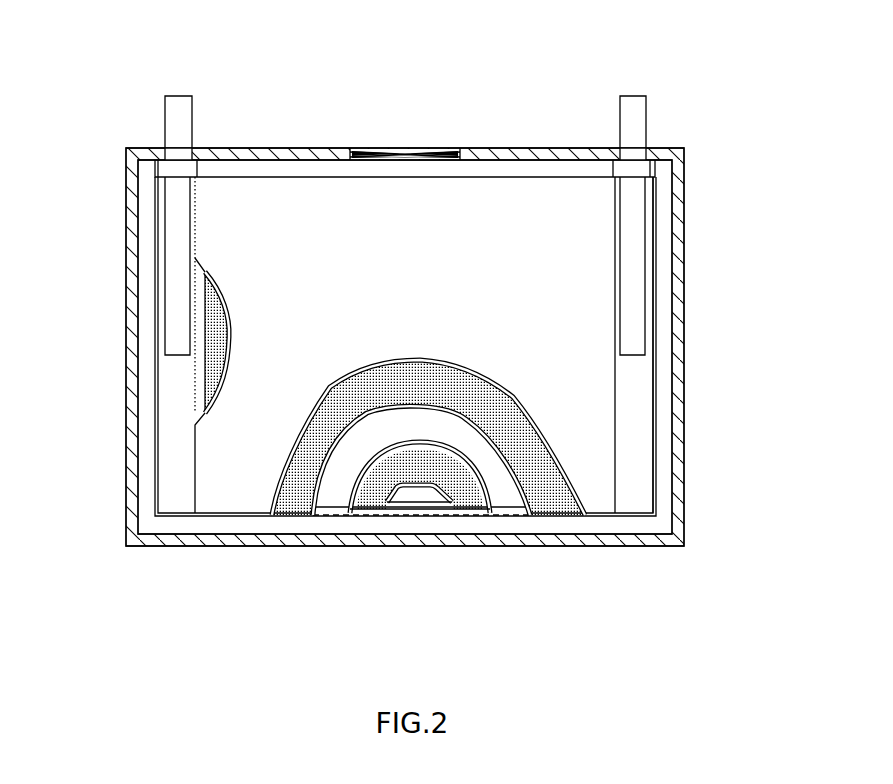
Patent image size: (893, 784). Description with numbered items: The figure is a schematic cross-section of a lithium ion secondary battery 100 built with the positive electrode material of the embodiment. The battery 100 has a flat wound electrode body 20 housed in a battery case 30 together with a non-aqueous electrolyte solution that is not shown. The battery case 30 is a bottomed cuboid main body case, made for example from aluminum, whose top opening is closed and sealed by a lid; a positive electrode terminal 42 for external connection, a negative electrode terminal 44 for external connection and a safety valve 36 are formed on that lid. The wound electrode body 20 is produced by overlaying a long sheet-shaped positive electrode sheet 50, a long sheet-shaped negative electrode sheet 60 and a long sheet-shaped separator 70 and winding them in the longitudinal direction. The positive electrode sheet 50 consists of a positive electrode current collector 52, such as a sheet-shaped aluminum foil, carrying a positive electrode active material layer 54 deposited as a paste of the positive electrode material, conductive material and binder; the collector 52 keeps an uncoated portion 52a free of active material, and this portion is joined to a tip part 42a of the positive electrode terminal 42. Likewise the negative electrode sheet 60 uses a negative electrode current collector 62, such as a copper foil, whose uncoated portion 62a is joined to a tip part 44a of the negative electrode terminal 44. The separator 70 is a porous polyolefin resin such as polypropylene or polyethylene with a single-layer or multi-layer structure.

The lithium ion secondary battery 100 is at (683, 114).
The wound electrode body 20 is at (292, 210).
The battery case 30 is at (683, 257).
The safety valve 36 is at (405, 149).
The positive electrode terminal 42 is at (177, 95).
The tip part of the positive electrode terminal 42a is at (177, 245).
The negative electrode terminal 44 is at (632, 102).
The tip part of the negative electrode terminal 44a is at (632, 210).
The positive electrode sheet 50 is at (292, 502).
The positive electrode current collector 52 is at (155, 412).
The uncoated portion of the positive electrode current collector 52a is at (173, 490).
The positive electrode active material layer 54 is at (218, 308).
The negative electrode sheet 60 is at (368, 497).
The negative electrode current collector 62 is at (655, 368).
The uncoated portion of the negative electrode current collector 62a is at (640, 415).
The separator 70 is at (233, 445).